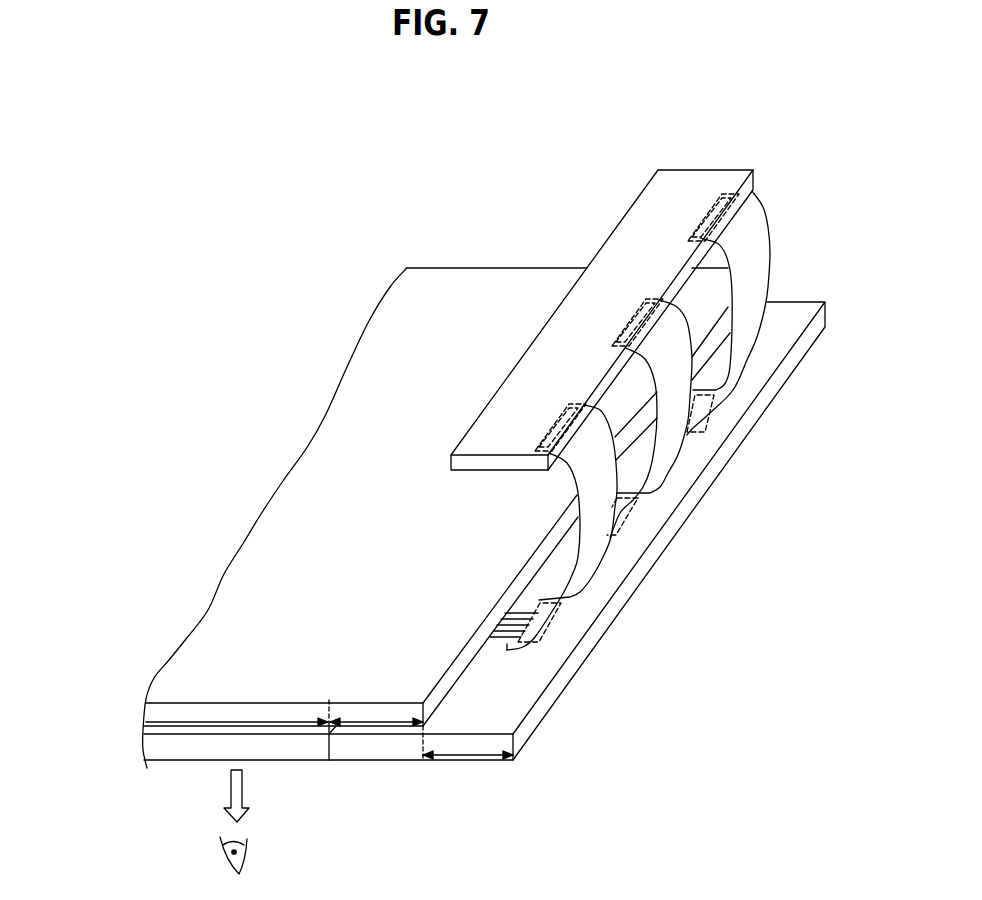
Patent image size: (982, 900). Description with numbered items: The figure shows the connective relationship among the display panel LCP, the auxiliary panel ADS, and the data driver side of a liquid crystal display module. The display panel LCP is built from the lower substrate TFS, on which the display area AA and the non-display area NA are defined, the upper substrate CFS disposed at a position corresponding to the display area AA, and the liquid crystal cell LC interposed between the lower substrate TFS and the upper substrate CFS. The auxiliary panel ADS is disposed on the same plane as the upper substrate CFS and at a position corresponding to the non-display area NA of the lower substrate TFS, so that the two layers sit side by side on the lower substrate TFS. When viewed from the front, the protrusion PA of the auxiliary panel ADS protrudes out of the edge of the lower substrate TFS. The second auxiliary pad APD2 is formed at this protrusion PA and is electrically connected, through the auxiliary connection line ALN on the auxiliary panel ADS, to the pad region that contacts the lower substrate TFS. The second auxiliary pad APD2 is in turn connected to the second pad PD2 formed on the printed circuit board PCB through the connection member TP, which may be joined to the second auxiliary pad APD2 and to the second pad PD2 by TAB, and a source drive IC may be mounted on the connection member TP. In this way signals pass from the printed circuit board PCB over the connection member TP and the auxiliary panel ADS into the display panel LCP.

The display panel LCP is at (391, 518).
The lower substrate TFS is at (147, 710).
The liquid crystal cell LC is at (146, 729).
The upper substrate CFS is at (146, 745).
The auxiliary panel ADS is at (618, 598).
The printed circuit board PCB is at (703, 180).
The second pad PD2 is at (707, 217).
The connection member TP is at (750, 320).
The second auxiliary pad APD2 is at (520, 643).
The auxiliary connection line ALN is at (503, 648).
The display area AA is at (237, 713).
The non-display area NA is at (376, 715).
The protrusion PA is at (468, 743).